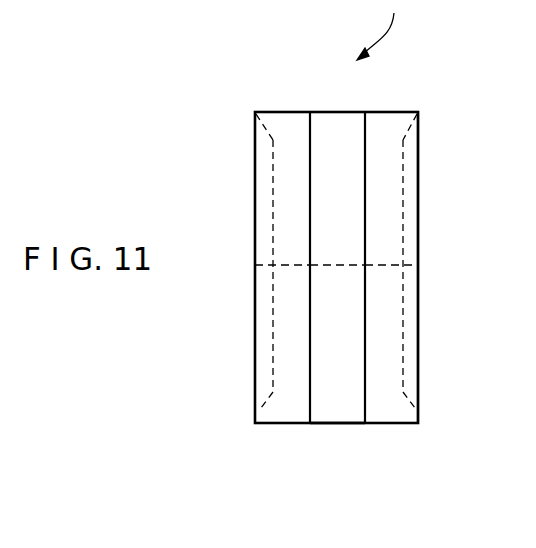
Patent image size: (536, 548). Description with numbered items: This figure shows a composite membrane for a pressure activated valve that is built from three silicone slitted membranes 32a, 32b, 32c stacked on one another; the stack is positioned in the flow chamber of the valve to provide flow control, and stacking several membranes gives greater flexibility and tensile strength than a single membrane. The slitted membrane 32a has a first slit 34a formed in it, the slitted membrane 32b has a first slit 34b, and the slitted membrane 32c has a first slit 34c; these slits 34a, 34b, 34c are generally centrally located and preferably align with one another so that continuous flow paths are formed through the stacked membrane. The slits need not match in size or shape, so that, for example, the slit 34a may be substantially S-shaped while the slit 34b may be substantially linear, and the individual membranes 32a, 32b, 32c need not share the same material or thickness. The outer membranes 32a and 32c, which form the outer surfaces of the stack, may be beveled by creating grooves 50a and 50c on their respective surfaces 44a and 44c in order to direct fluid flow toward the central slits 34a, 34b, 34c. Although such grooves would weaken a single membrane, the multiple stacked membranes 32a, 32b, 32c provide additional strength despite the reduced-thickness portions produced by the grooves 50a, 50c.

The slitted membrane 32a is at (292, 111).
The slitted membrane 32b is at (345, 424).
The slitted membrane 32c is at (396, 111).
The first slit 34a is at (283, 250).
The first slit 34b is at (337, 250).
The first slit 34c is at (385, 250).
The surface 44a is at (255, 155).
The surface 44c is at (418, 148).
The groove 50a is at (255, 352).
The groove 50c is at (418, 350).